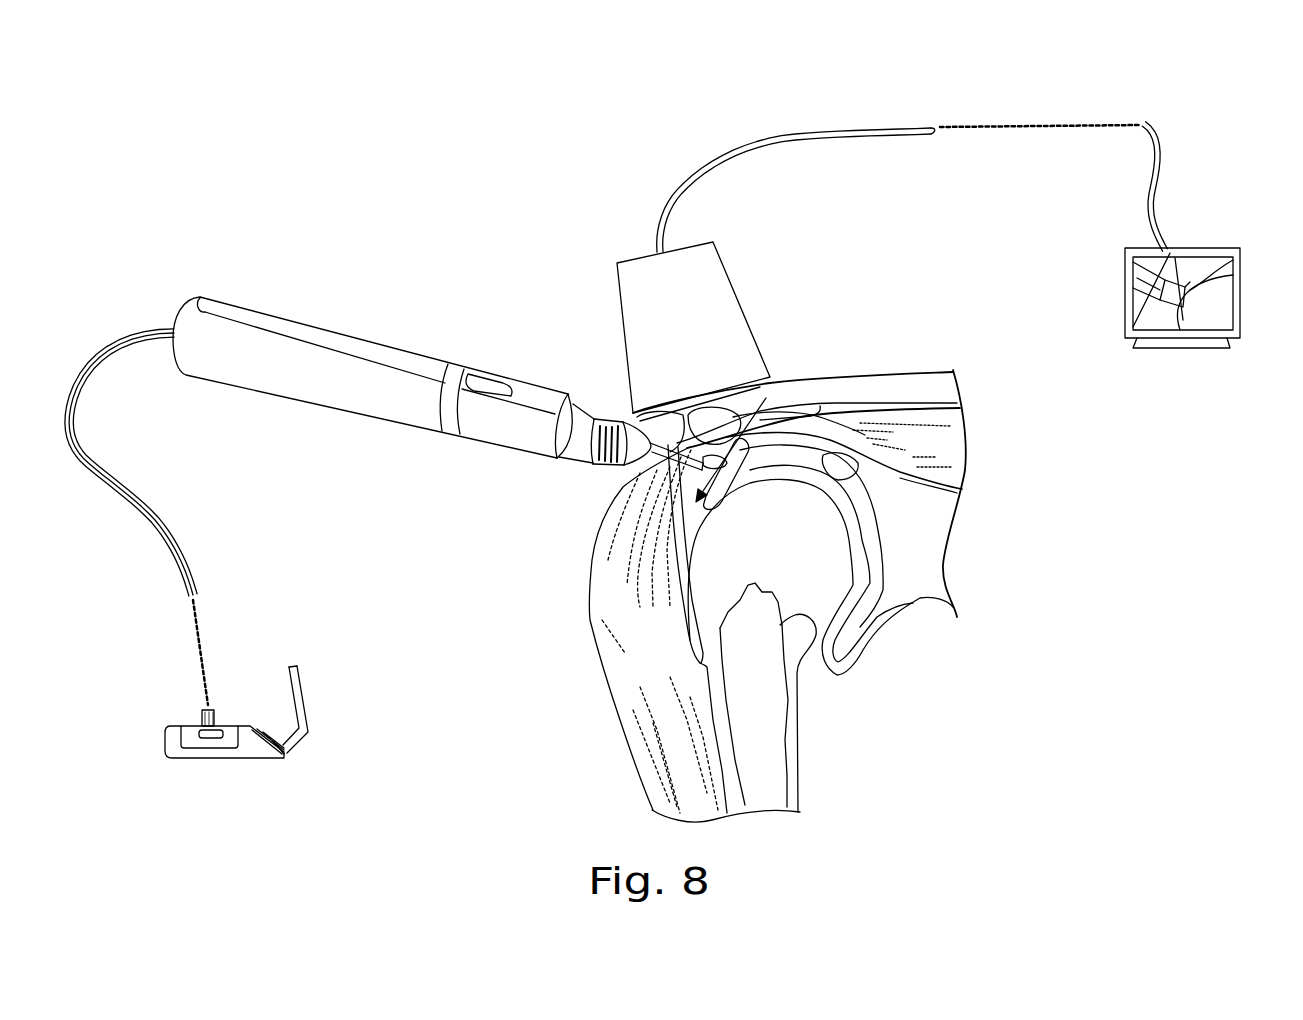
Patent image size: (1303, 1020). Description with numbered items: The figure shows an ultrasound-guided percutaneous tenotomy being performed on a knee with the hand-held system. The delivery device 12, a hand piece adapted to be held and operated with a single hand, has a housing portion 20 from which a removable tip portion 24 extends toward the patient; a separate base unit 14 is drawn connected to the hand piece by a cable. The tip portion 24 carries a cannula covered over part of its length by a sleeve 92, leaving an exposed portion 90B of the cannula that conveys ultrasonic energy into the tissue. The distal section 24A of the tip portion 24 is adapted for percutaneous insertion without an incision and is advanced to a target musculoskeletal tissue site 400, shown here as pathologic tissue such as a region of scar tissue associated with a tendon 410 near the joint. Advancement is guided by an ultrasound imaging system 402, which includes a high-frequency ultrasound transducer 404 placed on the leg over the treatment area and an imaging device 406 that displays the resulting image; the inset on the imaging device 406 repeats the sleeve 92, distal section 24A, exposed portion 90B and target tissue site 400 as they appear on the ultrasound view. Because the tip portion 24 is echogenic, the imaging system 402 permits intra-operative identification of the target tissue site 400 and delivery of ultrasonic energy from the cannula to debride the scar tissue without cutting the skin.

The delivery device 12 is at (240, 294).
The charging dock 14 is at (221, 794).
The housing portion 20 is at (406, 352).
The tip portion 24 is at (601, 481).
The distal section 24A is at (637, 412).
The sleeve 92 is at (510, 455).
The exposed portion 90B is at (766, 398).
The target musculoskeletal tissue site 400 is at (712, 482).
The ultrasound imaging system 402 is at (1080, 108).
The high-frequency ultrasound transducer 404 is at (728, 271).
The imaging device 406 is at (1212, 243).
The tendon 410 is at (745, 470).